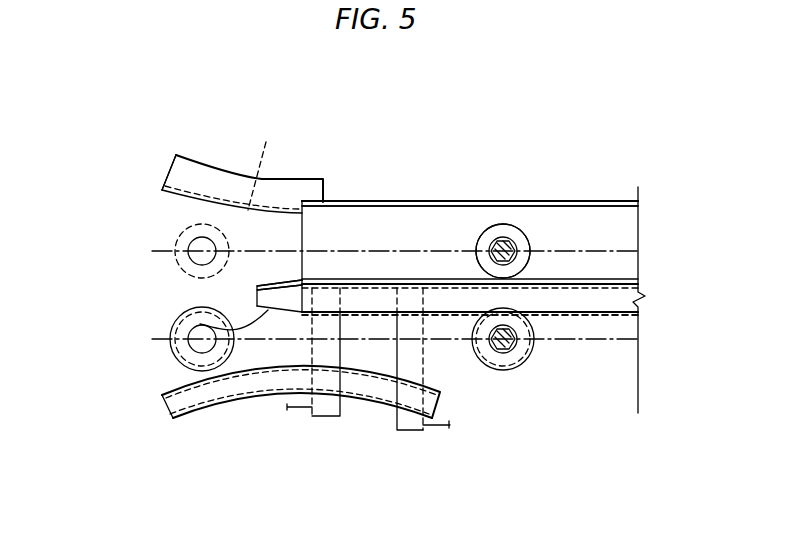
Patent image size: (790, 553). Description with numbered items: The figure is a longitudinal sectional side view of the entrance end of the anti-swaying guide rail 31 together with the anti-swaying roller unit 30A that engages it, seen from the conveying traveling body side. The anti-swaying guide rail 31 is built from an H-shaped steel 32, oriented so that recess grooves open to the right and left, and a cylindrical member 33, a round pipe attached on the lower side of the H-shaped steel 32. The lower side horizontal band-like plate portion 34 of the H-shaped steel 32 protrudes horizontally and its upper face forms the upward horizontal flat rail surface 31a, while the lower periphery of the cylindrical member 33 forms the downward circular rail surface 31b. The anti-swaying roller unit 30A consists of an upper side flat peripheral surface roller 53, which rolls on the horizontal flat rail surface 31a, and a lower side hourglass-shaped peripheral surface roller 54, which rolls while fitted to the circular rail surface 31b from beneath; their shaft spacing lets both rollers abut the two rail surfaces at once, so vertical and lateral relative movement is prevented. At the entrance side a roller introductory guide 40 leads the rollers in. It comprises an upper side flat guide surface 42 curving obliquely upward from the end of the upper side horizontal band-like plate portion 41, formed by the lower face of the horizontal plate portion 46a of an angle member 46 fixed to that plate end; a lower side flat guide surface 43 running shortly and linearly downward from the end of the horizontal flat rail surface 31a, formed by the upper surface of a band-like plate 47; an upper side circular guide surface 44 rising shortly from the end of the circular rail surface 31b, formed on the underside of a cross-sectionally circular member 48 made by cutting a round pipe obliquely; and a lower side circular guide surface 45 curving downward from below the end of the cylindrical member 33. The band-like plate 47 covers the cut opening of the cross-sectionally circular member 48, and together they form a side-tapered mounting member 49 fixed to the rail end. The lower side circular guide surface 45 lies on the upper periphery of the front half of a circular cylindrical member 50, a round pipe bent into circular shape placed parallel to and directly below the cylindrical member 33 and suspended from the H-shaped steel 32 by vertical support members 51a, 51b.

The anti-swaying roller unit 30A is at (499, 219).
The anti-swaying guide rail 31 is at (577, 201).
The horizontal flat rail surface 31a is at (599, 279).
The circular rail surface 31b is at (588, 312).
The H-shaped steel 32 is at (602, 200).
The cylindrical member 33 is at (555, 302).
The lower side horizontal band-like plate portion 34 is at (438, 280).
The roller introductory guide 40 is at (148, 179).
The upper side horizontal band-like plate portion 41 is at (400, 201).
The upper side flat guide surface 42 is at (198, 203).
The lower side flat guide surface 43 is at (293, 279).
The upper side circular guide surface 44 is at (198, 323).
The lower side circular guide surface 45 is at (198, 381).
The angle member 46 is at (209, 180).
The horizontal plate portion 46a is at (273, 163).
The band-like plate 47 is at (277, 283).
The cross-sectionally circular member 48 is at (289, 297).
The mounting member 49 is at (246, 297).
The circular cylindrical member 50 is at (236, 388).
The vertical support member 51a is at (332, 353).
The vertical support member 51b is at (412, 352).
The upper side flat peripheral surface roller 53 is at (514, 226).
The lower side hourglass-shaped peripheral surface roller 54 is at (508, 360).